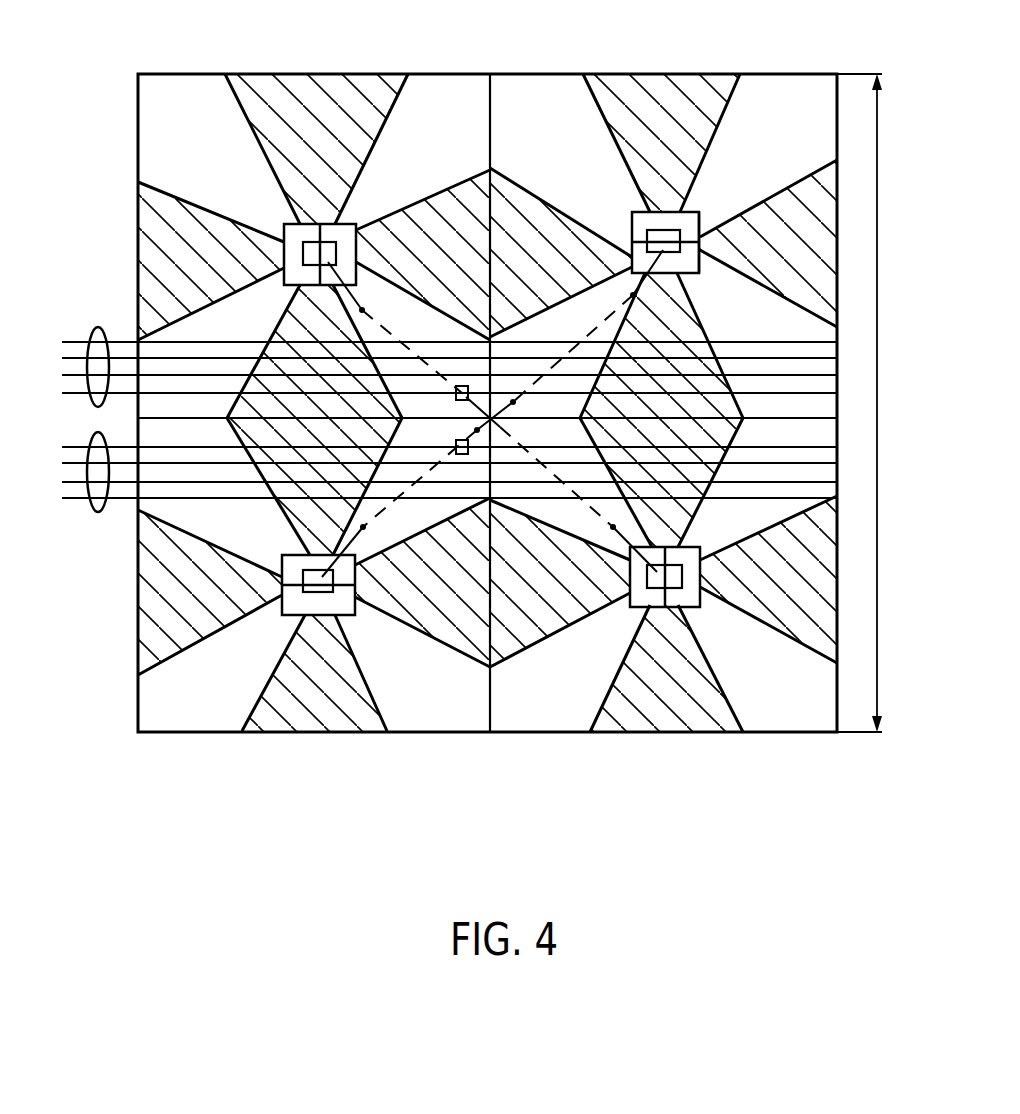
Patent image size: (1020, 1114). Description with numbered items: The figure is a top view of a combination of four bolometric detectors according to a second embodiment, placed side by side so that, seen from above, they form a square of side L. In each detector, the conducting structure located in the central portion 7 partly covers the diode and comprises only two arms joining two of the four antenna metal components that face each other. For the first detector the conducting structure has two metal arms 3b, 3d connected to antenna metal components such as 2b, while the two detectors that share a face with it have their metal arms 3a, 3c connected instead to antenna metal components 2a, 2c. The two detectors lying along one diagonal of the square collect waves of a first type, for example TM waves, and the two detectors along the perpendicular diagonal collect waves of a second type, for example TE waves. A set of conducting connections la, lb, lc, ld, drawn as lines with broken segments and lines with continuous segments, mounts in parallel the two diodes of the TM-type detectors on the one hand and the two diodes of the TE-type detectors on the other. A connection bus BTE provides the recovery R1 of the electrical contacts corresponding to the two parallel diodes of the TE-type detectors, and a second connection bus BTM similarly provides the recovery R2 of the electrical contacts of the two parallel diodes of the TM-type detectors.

The antenna metal component 2a is at (163, 207).
The antenna metal component 2b is at (293, 108).
The antenna metal component 2c is at (458, 193).
The metal arm 3a is at (635, 212).
The metal arm 3b is at (330, 228).
The metal arm 3c is at (685, 213).
The metal arm 3d is at (290, 293).
The central portion 7 is at (295, 232).
The conducting connection la is at (446, 320).
The conducting connection lb is at (587, 303).
The conducting connection lc is at (612, 527).
The conducting connection ld is at (442, 513).
The recovery of electrical contacts R1 is at (455, 394).
The recovery of electrical contacts R2 is at (455, 445).
The connection bus BTE is at (98, 327).
The connection bus BTM is at (97, 513).
The side of the square L is at (890, 403).